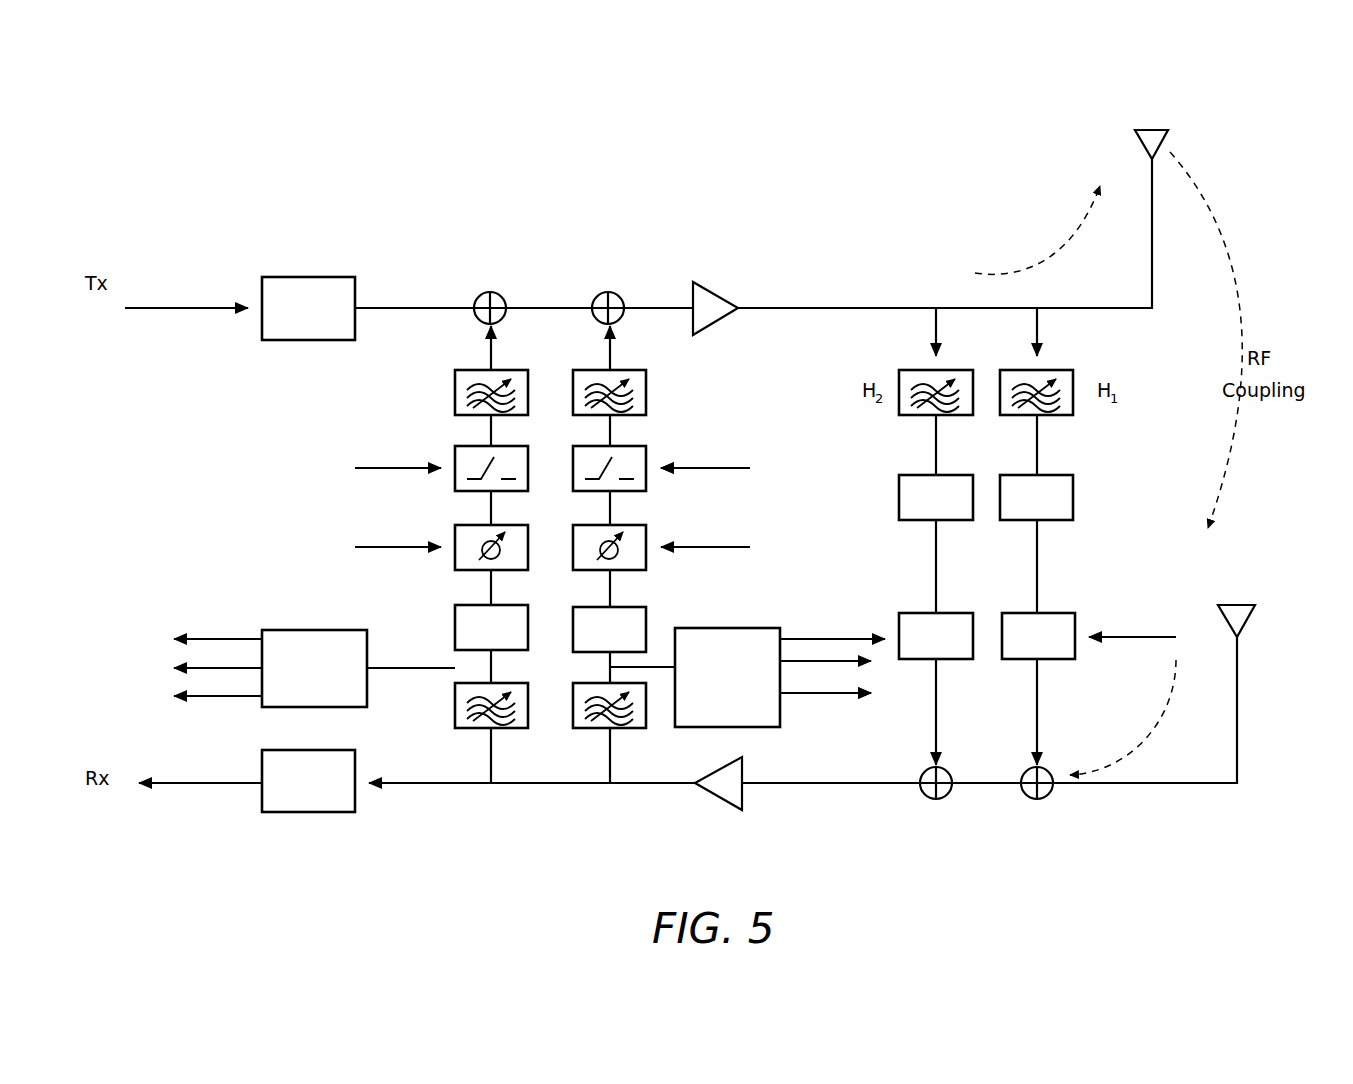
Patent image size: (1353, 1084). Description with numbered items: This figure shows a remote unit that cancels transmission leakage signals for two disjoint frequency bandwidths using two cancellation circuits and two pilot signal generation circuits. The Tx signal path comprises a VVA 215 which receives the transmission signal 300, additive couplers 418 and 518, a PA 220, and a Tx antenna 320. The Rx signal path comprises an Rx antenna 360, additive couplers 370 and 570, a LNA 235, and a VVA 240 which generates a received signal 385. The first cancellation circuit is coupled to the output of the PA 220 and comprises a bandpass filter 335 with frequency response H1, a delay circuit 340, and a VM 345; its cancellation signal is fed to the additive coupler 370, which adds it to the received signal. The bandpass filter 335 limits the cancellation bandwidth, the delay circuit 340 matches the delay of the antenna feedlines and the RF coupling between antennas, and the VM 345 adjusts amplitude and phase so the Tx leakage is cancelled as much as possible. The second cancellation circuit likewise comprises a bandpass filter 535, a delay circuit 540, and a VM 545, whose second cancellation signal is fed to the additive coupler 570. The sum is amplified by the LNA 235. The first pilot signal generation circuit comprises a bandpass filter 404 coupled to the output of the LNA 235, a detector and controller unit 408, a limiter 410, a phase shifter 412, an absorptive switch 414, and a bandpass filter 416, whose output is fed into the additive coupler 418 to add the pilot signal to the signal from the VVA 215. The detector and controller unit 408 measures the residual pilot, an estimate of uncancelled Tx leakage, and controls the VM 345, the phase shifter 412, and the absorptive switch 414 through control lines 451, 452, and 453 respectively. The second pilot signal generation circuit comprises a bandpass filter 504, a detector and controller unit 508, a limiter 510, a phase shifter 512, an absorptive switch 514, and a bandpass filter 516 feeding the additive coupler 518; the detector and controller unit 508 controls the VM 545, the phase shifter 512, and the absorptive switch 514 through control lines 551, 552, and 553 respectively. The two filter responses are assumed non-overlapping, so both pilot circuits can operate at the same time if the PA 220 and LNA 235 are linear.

The transmission signal 300 is at (192, 305).
The VVA 215 is at (305, 277).
The additive coupler 418 is at (493, 291).
The additive coupler 518 is at (610, 291).
The PA 220 is at (716, 291).
The Tx antenna 320 is at (1165, 130).
The bandpass filter 416 is at (455, 385).
The absorptive switch 414 is at (455, 455).
The control line 453 is at (355, 468).
The phase shifter 412 is at (455, 533).
The control line 452 is at (355, 547).
The limiter 410 is at (455, 618).
The bandpass filter 404 is at (455, 700).
The detector and controller unit 408 is at (315, 630).
The control line 451 is at (218, 639).
The bandpass filter 516 is at (647, 405).
The control line 553 is at (705, 468).
The absorptive switch 514 is at (647, 480).
The control line 552 is at (705, 547).
The phase shifter 512 is at (647, 560).
The limiter 510 is at (647, 625).
The bandpass filter 504 is at (647, 720).
The detector and controller unit 508 is at (750, 628).
The control line 551 is at (826, 639).
The bandpass filter 535 is at (950, 370).
The delay circuit 540 is at (950, 475).
The VM 545 is at (948, 613).
The bandpass filter 335 is at (1073, 410).
The delay circuit 340 is at (1073, 490).
The VM 345 is at (1075, 625).
The Rx antenna 360 is at (1255, 605).
The additive coupler 570 is at (944, 797).
The additive coupler 370 is at (1045, 797).
The LNA 235 is at (717, 796).
The VVA 240 is at (305, 812).
The received signal 385 is at (190, 783).